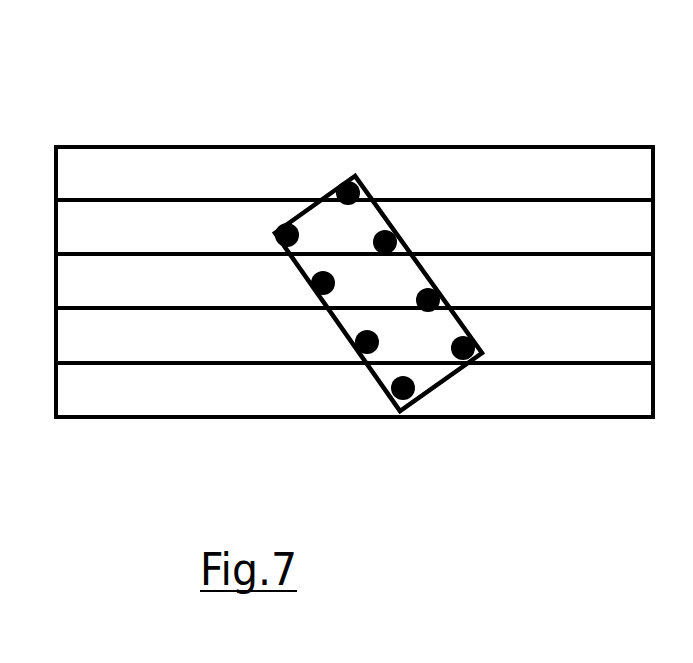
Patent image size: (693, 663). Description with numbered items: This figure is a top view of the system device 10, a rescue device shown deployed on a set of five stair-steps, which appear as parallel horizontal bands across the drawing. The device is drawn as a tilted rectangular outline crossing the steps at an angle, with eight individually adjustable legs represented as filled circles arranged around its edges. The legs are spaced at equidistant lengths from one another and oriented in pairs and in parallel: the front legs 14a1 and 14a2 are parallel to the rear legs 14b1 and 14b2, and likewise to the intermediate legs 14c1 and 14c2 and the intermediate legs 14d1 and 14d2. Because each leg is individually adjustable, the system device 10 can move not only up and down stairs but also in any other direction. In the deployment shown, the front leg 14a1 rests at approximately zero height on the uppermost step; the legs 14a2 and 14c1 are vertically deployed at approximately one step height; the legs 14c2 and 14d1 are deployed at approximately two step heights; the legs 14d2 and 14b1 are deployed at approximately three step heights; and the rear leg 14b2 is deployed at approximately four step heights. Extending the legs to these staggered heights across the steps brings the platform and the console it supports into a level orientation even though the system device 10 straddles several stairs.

The system device 10 is at (329, 176).
The front leg 14a1 is at (366, 182).
The front leg 14a2 is at (270, 236).
The rear leg 14b1 is at (484, 338).
The rear leg 14b2 is at (378, 397).
The intermediate leg 14c1 is at (409, 235).
The intermediate leg 14c2 is at (301, 285).
The intermediate leg 14d1 is at (444, 292).
The intermediate leg 14d2 is at (348, 345).